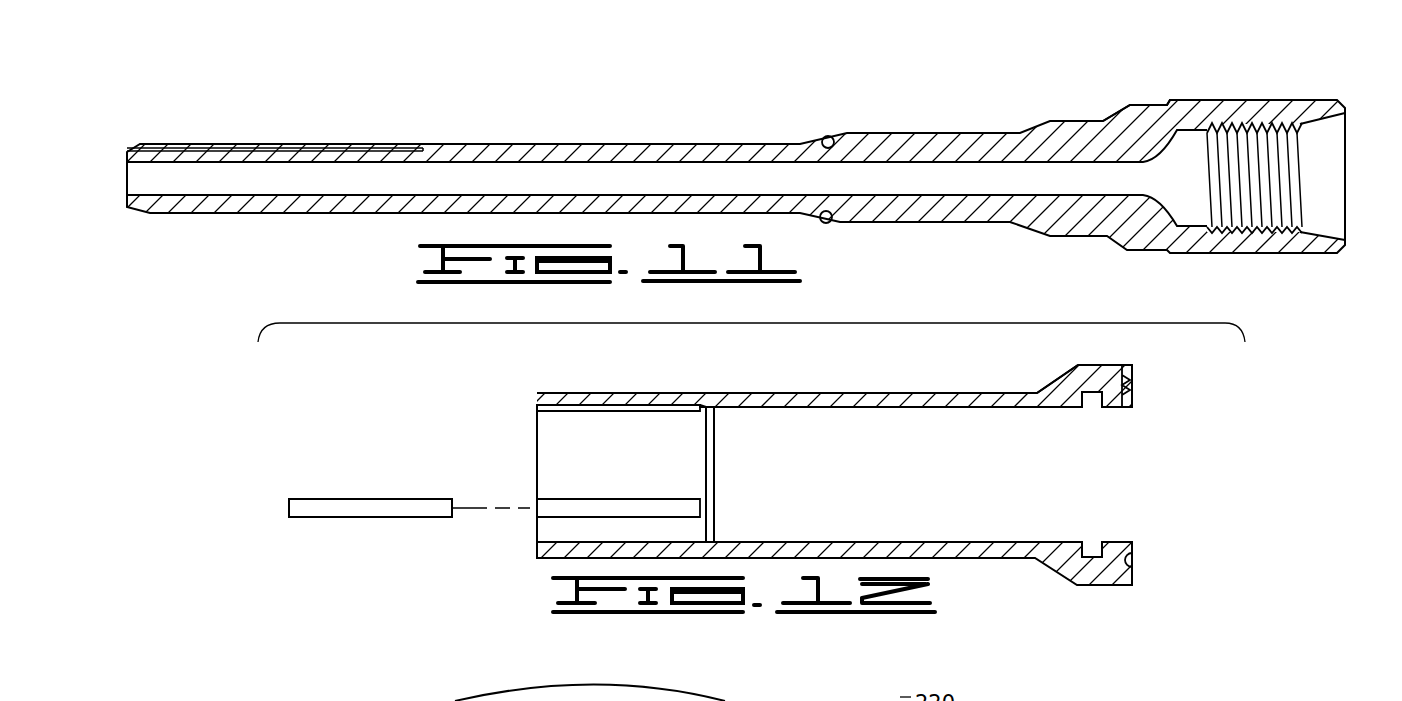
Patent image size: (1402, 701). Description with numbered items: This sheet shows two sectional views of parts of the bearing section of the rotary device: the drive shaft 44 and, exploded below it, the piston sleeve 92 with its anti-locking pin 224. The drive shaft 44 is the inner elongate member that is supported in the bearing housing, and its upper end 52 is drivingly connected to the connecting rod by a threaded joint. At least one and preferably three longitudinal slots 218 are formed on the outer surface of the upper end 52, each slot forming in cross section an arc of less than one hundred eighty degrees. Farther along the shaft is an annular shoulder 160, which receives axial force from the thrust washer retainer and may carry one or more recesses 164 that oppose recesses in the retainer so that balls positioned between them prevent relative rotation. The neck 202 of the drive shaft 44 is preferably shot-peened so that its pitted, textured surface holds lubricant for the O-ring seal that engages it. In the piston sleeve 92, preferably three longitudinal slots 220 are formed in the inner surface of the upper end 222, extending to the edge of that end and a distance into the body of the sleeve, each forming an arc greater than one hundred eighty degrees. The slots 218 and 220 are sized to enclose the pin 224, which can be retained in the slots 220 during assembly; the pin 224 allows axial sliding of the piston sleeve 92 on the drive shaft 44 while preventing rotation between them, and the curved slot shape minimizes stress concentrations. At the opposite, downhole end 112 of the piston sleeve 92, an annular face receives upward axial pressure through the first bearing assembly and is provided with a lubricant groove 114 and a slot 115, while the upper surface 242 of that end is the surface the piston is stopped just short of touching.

In FIG. 11, the drive shaft 44 is at (658, 145).
In FIG. 11, the longitudinal slots 218 is at (226, 150).
In FIG. 11, the upper end of the drive shaft 52 is at (287, 208).
In FIG. 11, the recesses 164 is at (827, 137).
In FIG. 11, the annular shoulder 160 is at (816, 214).
In FIG. 11, the neck 202 is at (1082, 120).
In FIG. 12, the piston sleeve 92 is at (920, 393).
In FIG. 12, the upper end of the piston sleeve 222 is at (675, 393).
In FIG. 12, the longitudinal slots 220 is at (562, 409).
In FIG. 12, the pin 224 is at (400, 497).
In FIG. 12, the upper surface of the piston sleeve 242 is at (1060, 374).
In FIG. 12, the downhole end of the piston sleeve 112 is at (1093, 375).
In FIG. 12, the slot 115 is at (1134, 372).
In FIG. 12, the lubricant groove 114 is at (1139, 562).